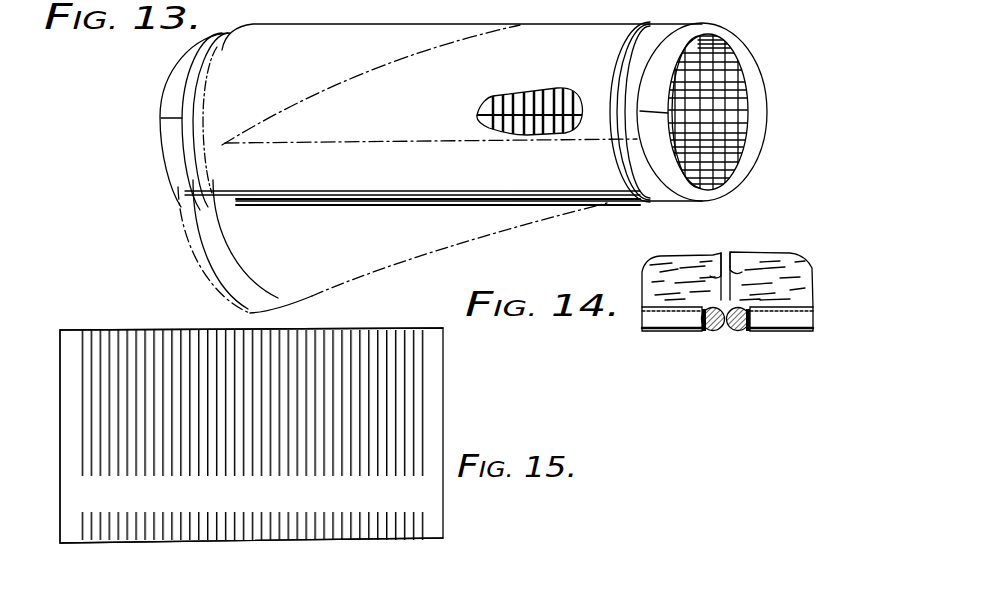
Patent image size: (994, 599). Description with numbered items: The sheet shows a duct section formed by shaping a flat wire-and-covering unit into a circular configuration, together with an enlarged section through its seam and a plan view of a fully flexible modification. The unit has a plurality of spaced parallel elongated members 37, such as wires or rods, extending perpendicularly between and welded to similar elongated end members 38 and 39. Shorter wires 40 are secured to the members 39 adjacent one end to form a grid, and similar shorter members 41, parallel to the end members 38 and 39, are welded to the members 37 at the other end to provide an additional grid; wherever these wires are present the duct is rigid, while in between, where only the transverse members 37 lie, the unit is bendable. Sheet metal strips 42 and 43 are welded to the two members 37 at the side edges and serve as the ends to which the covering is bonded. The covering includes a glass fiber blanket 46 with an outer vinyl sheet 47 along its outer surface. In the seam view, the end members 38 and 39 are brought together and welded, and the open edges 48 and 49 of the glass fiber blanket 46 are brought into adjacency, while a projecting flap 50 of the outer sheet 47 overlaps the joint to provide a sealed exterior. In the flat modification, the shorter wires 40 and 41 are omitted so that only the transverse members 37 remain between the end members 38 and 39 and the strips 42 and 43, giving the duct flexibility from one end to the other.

In FIG. 13, the elongated members 37 is at (561, 128).
In FIG. 14, the elongated members 37 is at (805, 320).
In FIG. 15, the elongated members 37 is at (402, 340).
In FIG. 13, the end member 38 is at (540, 112).
In FIG. 14, the end member 38 is at (740, 331).
In FIG. 15, the end member 38 is at (168, 340).
In FIG. 13, the end member 39 is at (531, 130).
In FIG. 14, the end member 39 is at (712, 331).
In FIG. 15, the end member 39 is at (425, 537).
In FIG. 13, the shorter wires 40 is at (371, 72).
In FIG. 13, the shorter members 41 is at (688, 140).
In FIG. 13, the sheet metal strip 42 is at (167, 103).
In FIG. 15, the sheet metal strip 42 is at (69, 345).
In FIG. 13, the sheet metal strip 43 is at (760, 100).
In FIG. 15, the sheet metal strip 43 is at (430, 395).
In FIG. 14, the glass fiber blanket 46 is at (797, 278).
In FIG. 13, the vinyl sheet 47 is at (397, 193).
In FIG. 14, the edge of the glass fiber blanket 48 is at (740, 270).
In FIG. 14, the edge of the glass fiber blanket 49 is at (722, 272).
In FIG. 13, the projecting flap 50 is at (226, 143).